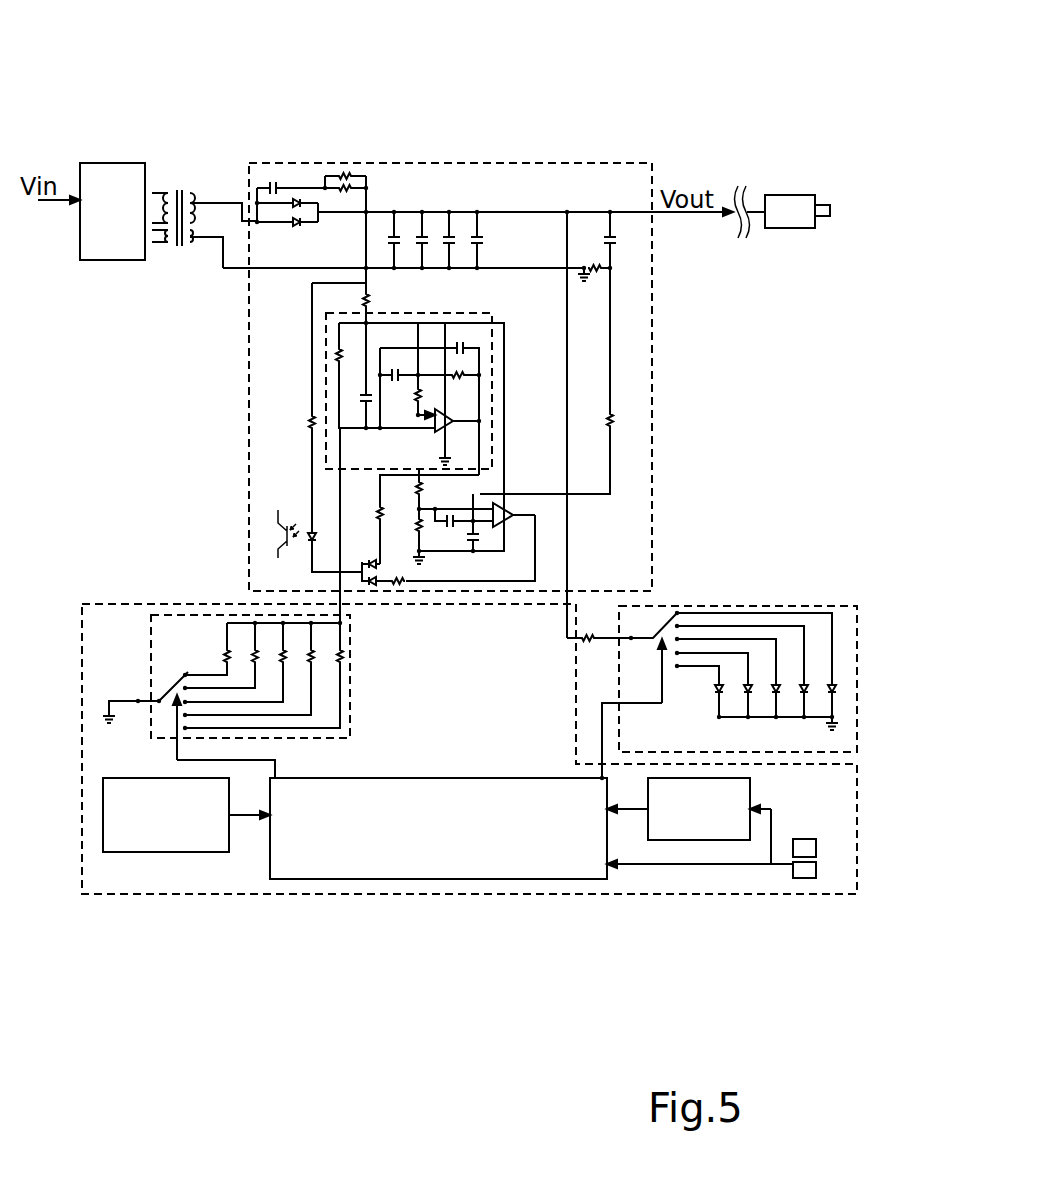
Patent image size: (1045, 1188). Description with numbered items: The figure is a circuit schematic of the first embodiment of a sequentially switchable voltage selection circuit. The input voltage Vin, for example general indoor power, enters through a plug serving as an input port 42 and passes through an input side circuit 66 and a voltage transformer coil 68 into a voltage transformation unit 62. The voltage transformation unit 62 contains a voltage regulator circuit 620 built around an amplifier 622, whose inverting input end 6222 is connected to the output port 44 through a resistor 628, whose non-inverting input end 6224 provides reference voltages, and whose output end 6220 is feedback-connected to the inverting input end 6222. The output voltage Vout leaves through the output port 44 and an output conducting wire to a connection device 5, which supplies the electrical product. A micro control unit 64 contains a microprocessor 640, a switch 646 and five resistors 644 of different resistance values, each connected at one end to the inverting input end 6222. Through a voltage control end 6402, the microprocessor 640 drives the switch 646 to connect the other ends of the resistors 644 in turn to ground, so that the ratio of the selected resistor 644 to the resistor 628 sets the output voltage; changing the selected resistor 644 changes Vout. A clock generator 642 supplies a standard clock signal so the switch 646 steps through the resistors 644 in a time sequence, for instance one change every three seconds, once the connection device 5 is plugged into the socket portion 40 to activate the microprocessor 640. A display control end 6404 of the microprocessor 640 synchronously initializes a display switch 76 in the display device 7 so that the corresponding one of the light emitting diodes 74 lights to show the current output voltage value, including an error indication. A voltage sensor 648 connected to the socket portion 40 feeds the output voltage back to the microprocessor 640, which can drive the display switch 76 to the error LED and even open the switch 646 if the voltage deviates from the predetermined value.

The connection device 5 is at (807, 227).
The display device 7 is at (787, 606).
The socket portion 40 is at (805, 877).
The input port 42 is at (80, 200).
The output port 44 is at (653, 212).
The voltage transformation unit 62 is at (253, 450).
The micro control unit 64 is at (106, 605).
The input side circuit 66 is at (97, 168).
The voltage transformer coil 68 is at (180, 183).
The light emitting diodes 74 is at (845, 690).
The display switch 76 is at (667, 614).
The voltage regulator circuit 620 is at (358, 426).
The amplifier 622 is at (445, 425).
The resistor 628 is at (372, 300).
The microprocessor 640 is at (457, 879).
The clock generator 642 is at (148, 852).
The resistors 644 is at (342, 662).
The switch 646 is at (173, 679).
The voltage sensor 648 is at (683, 832).
The output end 6220 is at (453, 421).
The inverting input end 6222 is at (453, 421).
The non-inverting input end 6224 is at (417, 415).
The voltage control end 6402 is at (276, 769).
The display control end 6404 is at (602, 738).